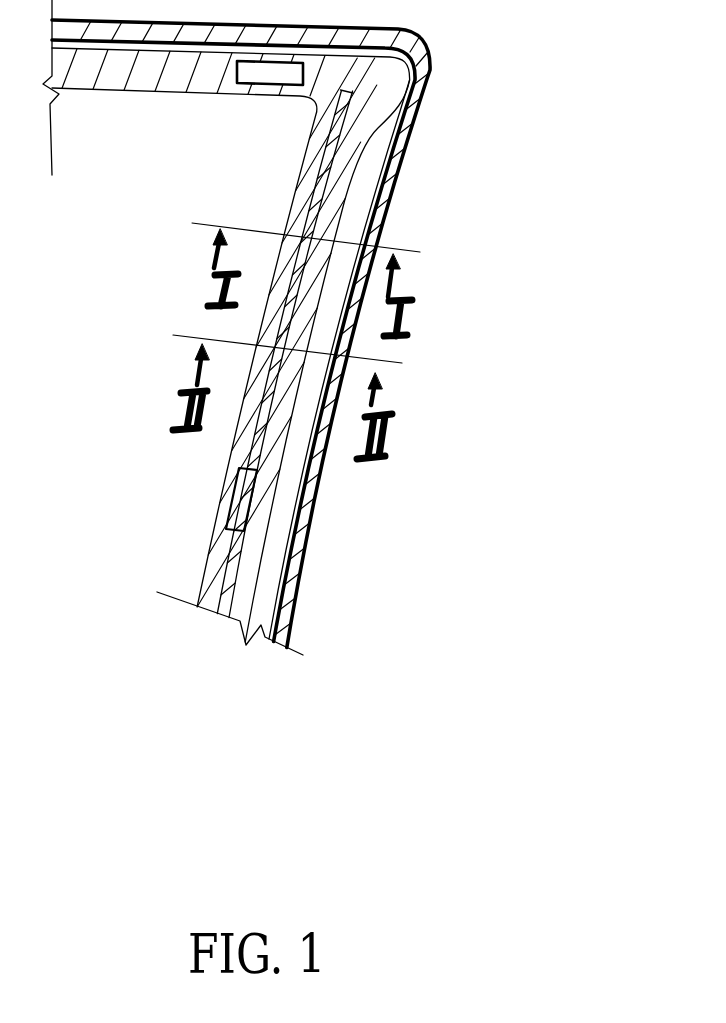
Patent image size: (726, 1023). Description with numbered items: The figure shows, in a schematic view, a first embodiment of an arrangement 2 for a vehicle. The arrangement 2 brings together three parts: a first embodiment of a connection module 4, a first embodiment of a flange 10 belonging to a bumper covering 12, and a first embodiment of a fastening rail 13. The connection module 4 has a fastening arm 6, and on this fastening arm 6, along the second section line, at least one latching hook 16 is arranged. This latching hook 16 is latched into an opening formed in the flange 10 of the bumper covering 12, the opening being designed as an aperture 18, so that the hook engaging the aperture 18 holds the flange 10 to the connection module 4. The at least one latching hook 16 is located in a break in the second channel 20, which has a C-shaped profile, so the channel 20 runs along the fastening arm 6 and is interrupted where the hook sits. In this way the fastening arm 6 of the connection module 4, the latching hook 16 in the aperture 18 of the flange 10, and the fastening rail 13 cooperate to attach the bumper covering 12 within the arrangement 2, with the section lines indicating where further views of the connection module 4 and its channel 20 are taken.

The arrangement 2 is at (274, 347).
The connection module 4 is at (114, 278).
The fastening arm 6 is at (204, 616).
The flange 10 is at (290, 350).
The bumper covering 12 is at (410, 124).
The fastening rail 13 is at (113, 78).
The latching hook 16 is at (307, 264).
The aperture 18 is at (313, 220).
The second channel 20 is at (256, 376).